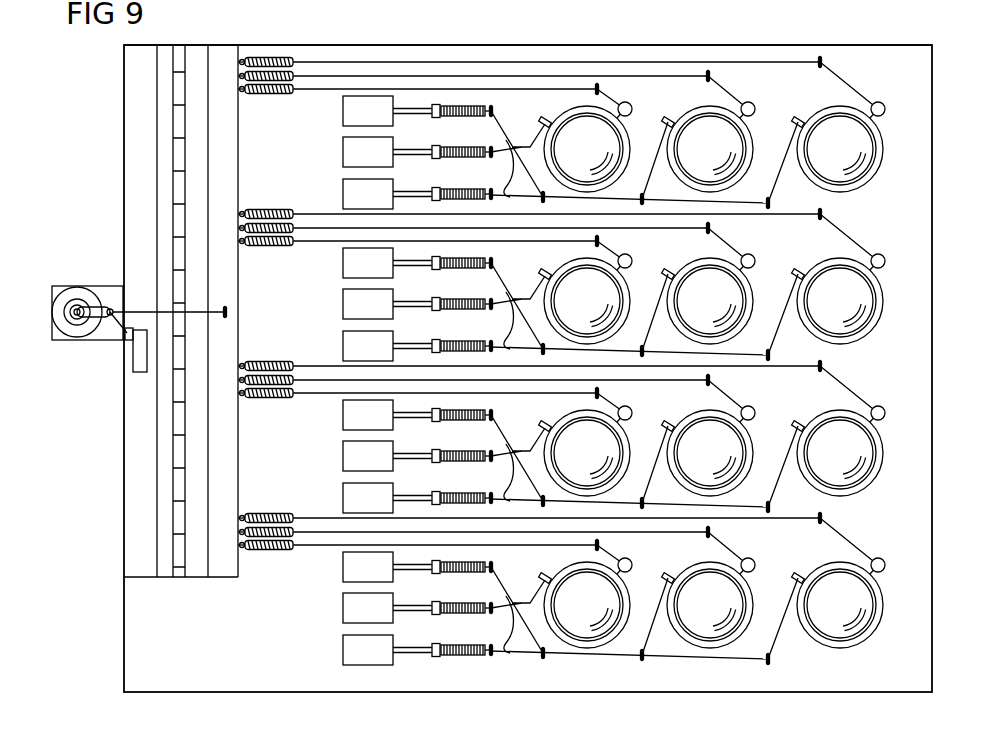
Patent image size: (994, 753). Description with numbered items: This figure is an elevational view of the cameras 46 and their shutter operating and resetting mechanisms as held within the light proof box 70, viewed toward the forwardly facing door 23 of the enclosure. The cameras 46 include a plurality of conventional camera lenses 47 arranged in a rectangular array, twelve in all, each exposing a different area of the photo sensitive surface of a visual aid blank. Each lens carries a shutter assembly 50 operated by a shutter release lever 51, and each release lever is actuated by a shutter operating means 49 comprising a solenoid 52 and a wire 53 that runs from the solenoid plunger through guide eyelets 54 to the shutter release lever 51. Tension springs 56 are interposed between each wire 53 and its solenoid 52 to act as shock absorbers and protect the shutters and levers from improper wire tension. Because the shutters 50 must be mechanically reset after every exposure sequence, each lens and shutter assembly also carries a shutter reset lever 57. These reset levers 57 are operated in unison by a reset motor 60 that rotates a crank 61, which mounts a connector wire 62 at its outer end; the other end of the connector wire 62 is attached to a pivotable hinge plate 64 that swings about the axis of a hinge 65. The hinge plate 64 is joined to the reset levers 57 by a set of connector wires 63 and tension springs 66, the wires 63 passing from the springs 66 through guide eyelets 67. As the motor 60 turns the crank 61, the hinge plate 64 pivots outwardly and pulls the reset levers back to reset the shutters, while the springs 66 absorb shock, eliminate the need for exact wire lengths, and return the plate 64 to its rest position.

The door 23 is at (268, 0).
The cameras 46 is at (874, 193).
The camera lenses 47 is at (610, 135).
The shutter operating means 49 is at (334, 118).
The shutter assembly 50 is at (540, 120).
The shutter release lever 51 is at (792, 124).
The solenoid 52 is at (343, 188).
The wire 53 is at (506, 185).
The guide eyelets 54 is at (772, 203).
The tension springs 56 is at (466, 147).
The shutter reset lever 57 is at (752, 108).
The reset motor 60 is at (75, 335).
The crank 61 is at (95, 300).
The connector wire 62 is at (130, 312).
The connector wires 63 is at (395, 78).
The hinge plate 64 is at (232, 346).
The hinge 65 is at (160, 432).
The tension springs 66 is at (275, 75).
The guide eyelets 67 is at (712, 77).
The light proof box 70 is at (250, 683).